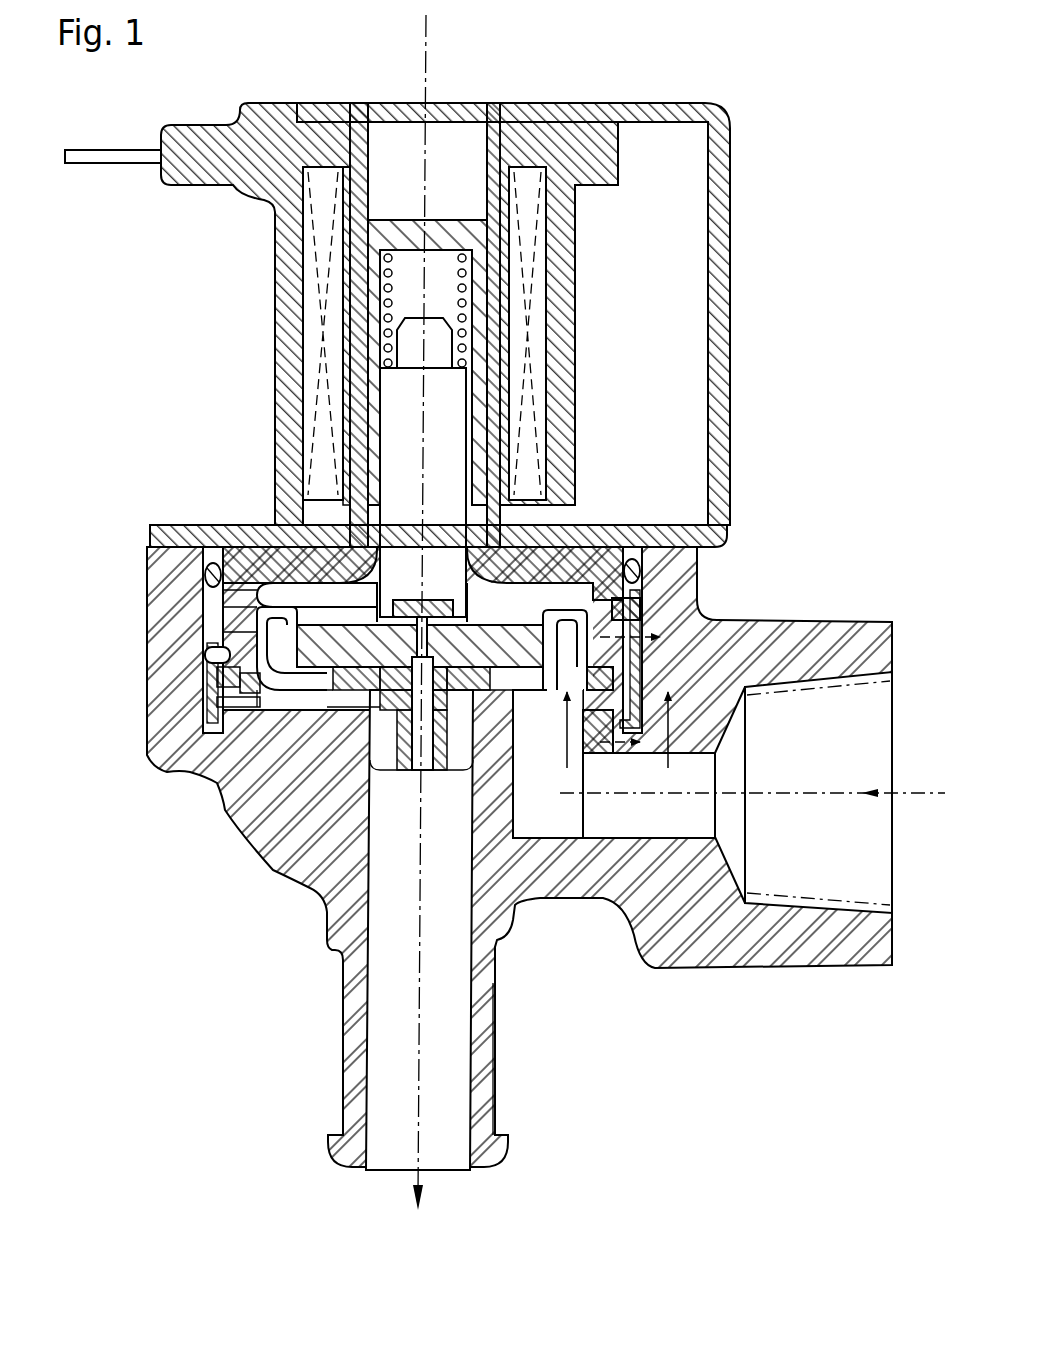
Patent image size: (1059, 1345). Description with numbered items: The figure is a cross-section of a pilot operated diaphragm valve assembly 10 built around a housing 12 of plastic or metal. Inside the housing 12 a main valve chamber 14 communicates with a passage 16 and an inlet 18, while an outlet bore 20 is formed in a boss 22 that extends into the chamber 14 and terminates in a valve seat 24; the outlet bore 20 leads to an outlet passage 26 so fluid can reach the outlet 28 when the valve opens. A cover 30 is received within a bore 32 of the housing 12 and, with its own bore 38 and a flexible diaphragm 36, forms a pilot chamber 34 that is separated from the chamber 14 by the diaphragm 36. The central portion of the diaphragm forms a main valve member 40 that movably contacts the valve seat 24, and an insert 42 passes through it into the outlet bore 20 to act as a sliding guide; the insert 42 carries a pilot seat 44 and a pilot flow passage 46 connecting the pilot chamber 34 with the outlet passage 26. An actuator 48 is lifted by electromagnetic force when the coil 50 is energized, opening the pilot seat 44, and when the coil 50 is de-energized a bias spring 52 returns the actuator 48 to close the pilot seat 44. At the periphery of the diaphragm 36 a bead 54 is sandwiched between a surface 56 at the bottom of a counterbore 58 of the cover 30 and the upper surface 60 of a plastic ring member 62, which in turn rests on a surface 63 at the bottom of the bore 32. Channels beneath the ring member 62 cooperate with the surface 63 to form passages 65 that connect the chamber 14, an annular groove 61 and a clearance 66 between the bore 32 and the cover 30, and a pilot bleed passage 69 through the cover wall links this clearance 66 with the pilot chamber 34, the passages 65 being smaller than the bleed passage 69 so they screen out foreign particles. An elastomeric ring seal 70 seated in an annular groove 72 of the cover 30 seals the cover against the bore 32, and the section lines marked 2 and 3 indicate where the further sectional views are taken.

The valve assembly 10 is at (236, 912).
The housing 12 is at (780, 967).
The main valve chamber 14 is at (547, 752).
The passage 16 is at (636, 790).
The inlet 18 is at (836, 763).
The outlet bore 20 is at (462, 775).
The boss 22 is at (526, 804).
The valve seat 24 is at (500, 700).
The outlet passage 26 is at (450, 1030).
The outlet 28 is at (495, 1047).
The cover 30 is at (617, 553).
The bore 32 is at (215, 598).
The pilot chamber 34 is at (336, 608).
The flexible diaphragm 36 is at (240, 634).
The bore 38 is at (210, 612).
The main valve member 40 is at (258, 712).
The insert 42 is at (290, 578).
The pilot seat 44 is at (455, 612).
The pilot flow passage 46 is at (417, 760).
The actuator 48 is at (451, 439).
The coil 50 is at (575, 262).
The bias spring 52 is at (466, 303).
The bead 54 is at (230, 690).
The surface 56 is at (215, 660).
The counterbore 58 is at (615, 675).
The upper surface 60 is at (210, 728).
The annular groove 61 is at (230, 735).
The plastic ring member 62 is at (250, 745).
The surface 63 is at (262, 700).
The passages 65 is at (587, 796).
The clearance 66 is at (640, 608).
The pilot bleed passage 69 is at (642, 580).
The elastomeric ring seal 70 is at (205, 575).
The annular groove 72 is at (237, 545).
The section line 2- 2 is at (617, 742).
The section line 3- 3 is at (640, 690).